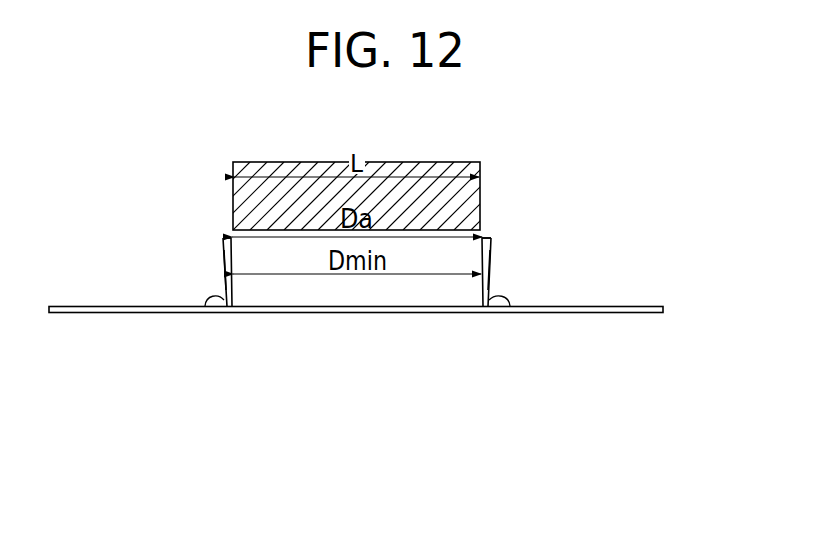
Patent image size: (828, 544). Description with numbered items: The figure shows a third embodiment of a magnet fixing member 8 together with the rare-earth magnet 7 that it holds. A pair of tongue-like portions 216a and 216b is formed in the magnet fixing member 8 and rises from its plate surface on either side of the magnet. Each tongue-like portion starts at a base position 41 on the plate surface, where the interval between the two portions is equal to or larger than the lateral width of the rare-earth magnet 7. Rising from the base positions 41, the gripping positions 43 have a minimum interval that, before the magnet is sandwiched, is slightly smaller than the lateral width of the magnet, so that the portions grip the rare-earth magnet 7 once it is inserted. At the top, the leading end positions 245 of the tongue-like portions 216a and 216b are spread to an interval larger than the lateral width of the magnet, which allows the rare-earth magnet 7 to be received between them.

The rare-earth magnet 7 is at (400, 200).
The magnet fixing member 8 is at (358, 313).
The tongue-like portion 216a is at (220, 256).
The tongue-like portion 216b is at (496, 254).
The leading end positions 245 is at (221, 239).
The gripping positions 43 is at (225, 273).
The base positions 41 is at (205, 306).